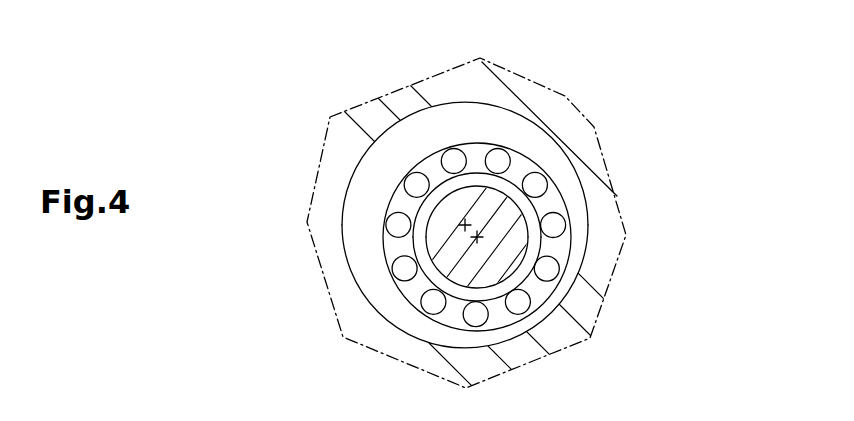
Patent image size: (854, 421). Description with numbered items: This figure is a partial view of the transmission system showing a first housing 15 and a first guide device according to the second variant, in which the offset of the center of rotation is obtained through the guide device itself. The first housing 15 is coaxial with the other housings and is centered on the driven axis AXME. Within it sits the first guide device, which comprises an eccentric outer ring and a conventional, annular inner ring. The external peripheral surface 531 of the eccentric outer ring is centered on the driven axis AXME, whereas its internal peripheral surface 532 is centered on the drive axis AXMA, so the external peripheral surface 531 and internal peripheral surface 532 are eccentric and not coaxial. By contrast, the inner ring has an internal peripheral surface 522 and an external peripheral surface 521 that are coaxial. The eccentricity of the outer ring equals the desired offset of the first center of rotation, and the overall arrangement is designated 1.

The shaft / drive assembly 1 is at (497, 203).
The first housing 15 is at (330, 117).
The external peripheral surface 531 is at (440, 120).
The internal peripheral surface 532 is at (560, 146).
The external peripheral surface 521 is at (435, 173).
The internal peripheral surface 522 is at (415, 239).
The driven axis AXME is at (459, 225).
The drive axis AXMA is at (483, 238).